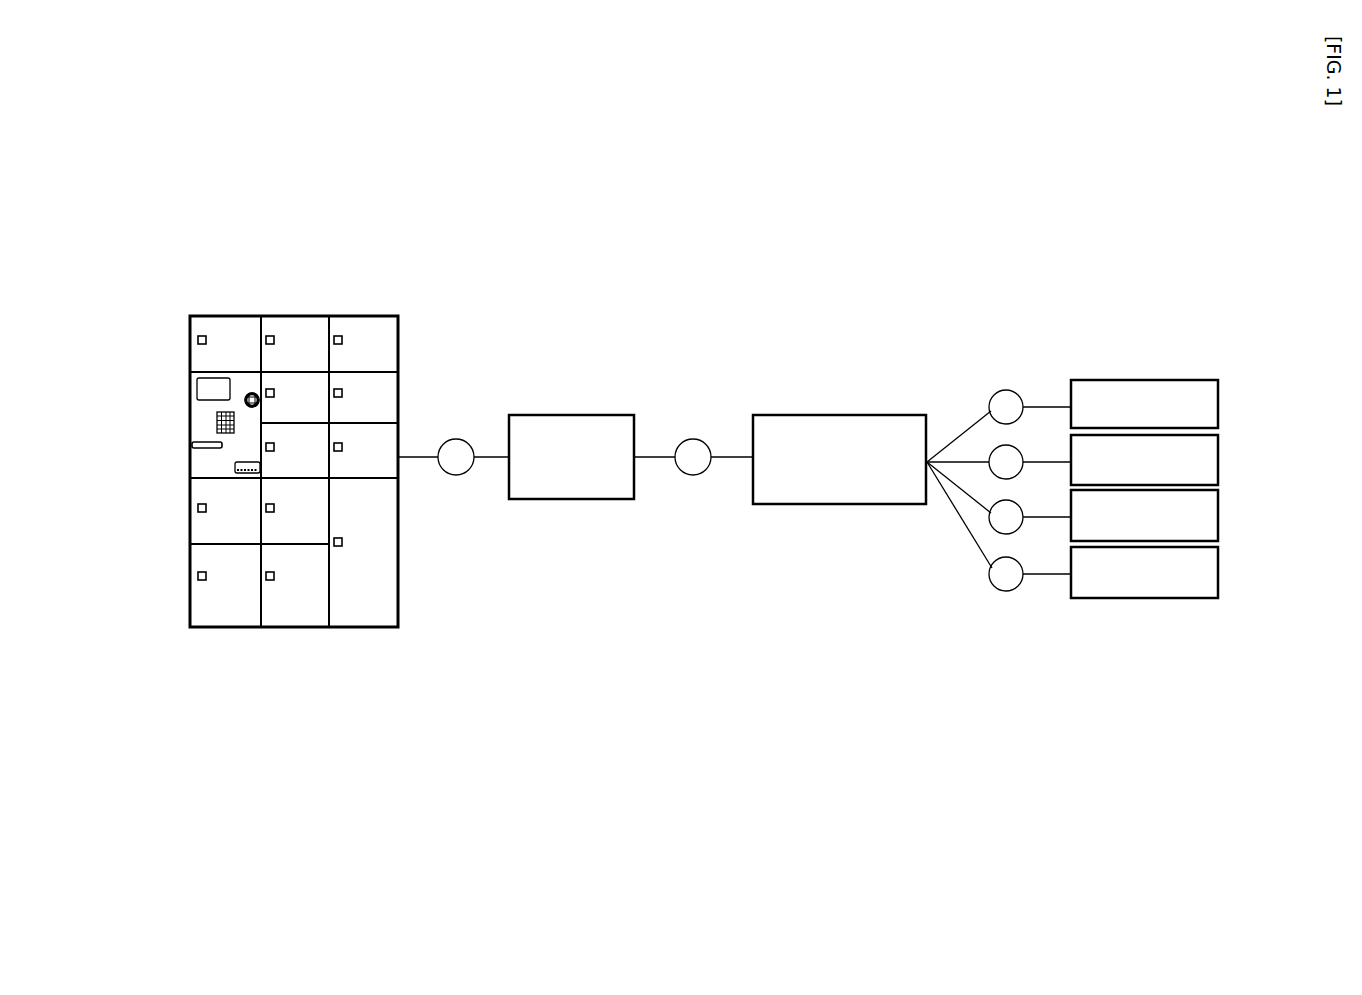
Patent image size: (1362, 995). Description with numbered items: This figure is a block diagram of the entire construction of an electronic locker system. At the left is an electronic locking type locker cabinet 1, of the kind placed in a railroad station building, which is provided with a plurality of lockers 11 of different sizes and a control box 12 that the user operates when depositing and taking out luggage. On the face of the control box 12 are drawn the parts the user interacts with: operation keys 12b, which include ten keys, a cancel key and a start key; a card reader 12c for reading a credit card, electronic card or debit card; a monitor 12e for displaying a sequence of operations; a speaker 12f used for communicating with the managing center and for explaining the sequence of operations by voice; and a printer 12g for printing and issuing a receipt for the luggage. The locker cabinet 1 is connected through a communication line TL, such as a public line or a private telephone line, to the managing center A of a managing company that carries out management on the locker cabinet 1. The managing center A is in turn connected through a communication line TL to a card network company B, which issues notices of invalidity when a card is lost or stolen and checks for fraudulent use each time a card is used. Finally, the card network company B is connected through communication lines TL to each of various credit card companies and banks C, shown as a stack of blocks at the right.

The locker cabinet 1 is at (255, 277).
The lockers 11 is at (322, 497).
The control box 12 is at (170, 369).
The operation keys 12b is at (217, 423).
The card reader 12c is at (203, 448).
The monitor 12e is at (207, 390).
The speaker 12f is at (255, 399).
The printer 12g is at (233, 467).
The communication line TL is at (456, 475).
The managing center A is at (575, 499).
The card network company B is at (848, 504).
The credit card companies and banks C is at (1218, 407).